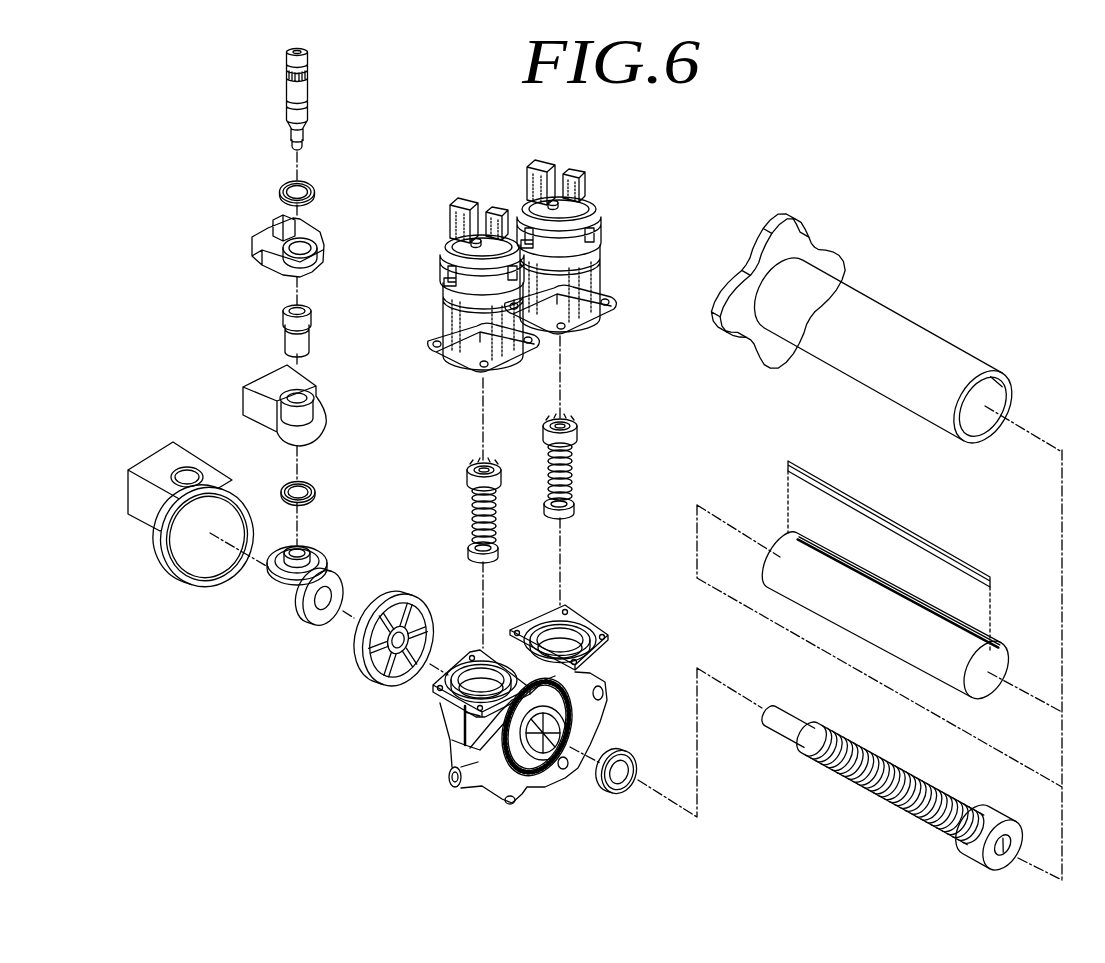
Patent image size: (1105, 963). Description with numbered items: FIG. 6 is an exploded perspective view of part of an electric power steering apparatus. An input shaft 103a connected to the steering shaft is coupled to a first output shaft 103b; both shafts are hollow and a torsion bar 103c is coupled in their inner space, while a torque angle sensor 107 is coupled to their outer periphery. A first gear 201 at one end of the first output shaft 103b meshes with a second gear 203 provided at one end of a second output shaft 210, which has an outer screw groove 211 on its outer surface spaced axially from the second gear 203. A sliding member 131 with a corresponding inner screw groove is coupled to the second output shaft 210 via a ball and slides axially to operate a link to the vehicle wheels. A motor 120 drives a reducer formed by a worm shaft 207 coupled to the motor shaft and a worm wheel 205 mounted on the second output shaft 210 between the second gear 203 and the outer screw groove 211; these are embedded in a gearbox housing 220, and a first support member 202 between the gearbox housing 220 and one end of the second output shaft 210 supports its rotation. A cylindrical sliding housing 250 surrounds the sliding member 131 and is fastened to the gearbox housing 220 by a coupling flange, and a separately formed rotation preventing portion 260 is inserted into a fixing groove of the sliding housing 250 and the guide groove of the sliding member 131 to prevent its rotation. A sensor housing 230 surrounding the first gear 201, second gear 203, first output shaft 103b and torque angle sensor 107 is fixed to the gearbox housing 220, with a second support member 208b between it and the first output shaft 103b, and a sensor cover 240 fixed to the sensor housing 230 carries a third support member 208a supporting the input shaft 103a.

The input shaft 103a is at (282, 80).
The first output shaft 103b is at (277, 330).
The torsion bar 103c is at (290, 141).
The torque angle sensor 107 is at (243, 250).
The motor 120 is at (508, 186).
The sliding member 131 is at (1010, 703).
The first gear 201 is at (281, 565).
The first support member 202 is at (603, 797).
The second gear 203 is at (317, 621).
The worm wheel 205 is at (365, 694).
The worm shaft 207 is at (513, 443).
The third support member 208a is at (318, 178).
The second support member 208b is at (320, 490).
The second output shaft 210 is at (853, 797).
The outer screw groove 211 is at (917, 813).
The gearbox housing 220 is at (467, 733).
The sensor housing 230 is at (155, 458).
The sensor cover 240 is at (250, 407).
The sliding housing 250 is at (918, 310).
The rotation preventing portion 260 is at (968, 553).